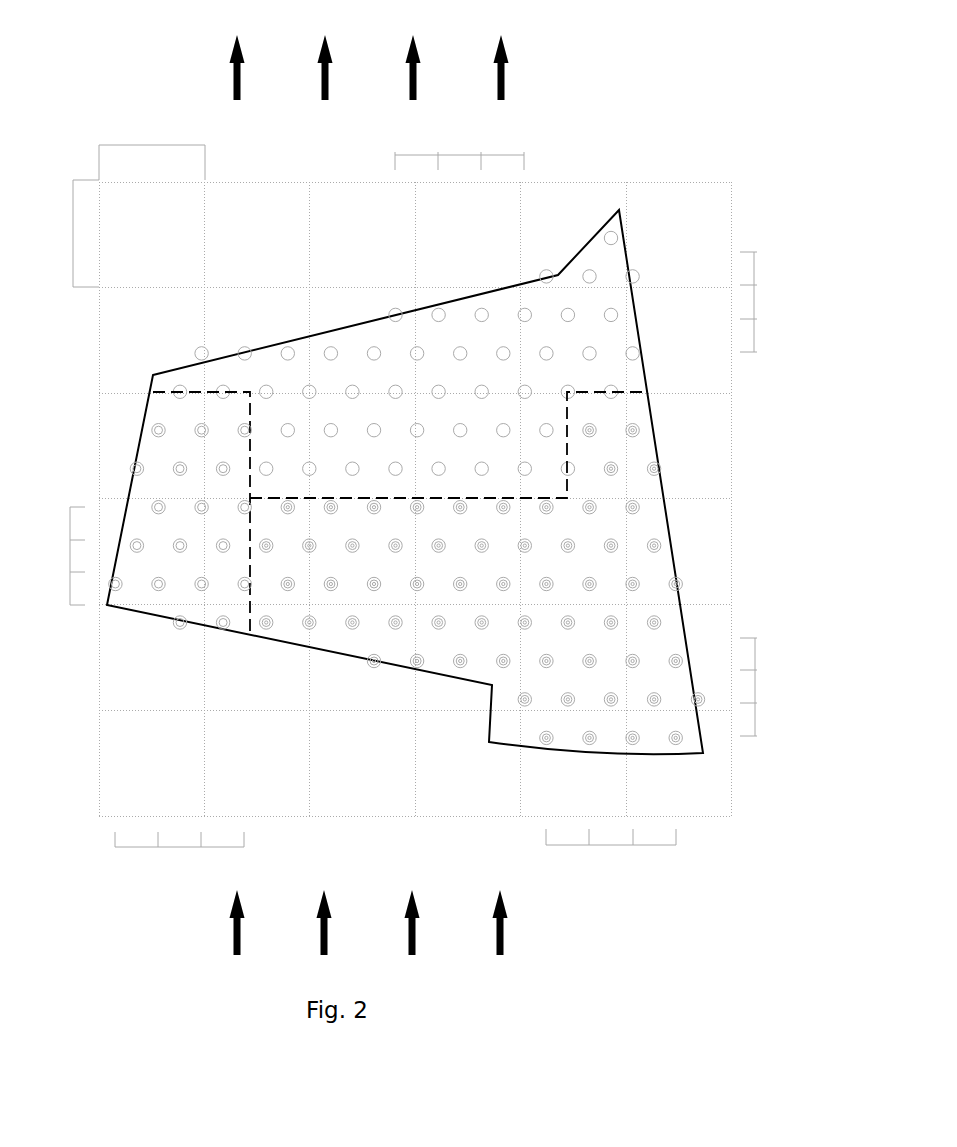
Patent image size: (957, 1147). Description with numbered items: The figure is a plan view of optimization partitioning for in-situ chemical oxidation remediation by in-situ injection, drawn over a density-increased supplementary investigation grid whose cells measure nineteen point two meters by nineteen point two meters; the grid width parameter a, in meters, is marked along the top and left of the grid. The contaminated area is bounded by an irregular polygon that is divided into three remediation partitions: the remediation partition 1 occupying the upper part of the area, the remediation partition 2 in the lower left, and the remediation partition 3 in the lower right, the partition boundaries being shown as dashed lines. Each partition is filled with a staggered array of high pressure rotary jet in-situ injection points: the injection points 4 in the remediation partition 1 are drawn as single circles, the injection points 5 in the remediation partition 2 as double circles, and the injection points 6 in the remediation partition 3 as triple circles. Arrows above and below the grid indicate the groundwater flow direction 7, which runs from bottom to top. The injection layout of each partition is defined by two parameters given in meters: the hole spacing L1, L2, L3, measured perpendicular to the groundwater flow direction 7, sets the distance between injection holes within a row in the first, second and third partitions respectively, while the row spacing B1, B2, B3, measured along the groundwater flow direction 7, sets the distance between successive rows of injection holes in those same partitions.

The remediation partition 1 is at (310, 350).
The remediation partition 2 is at (163, 482).
The remediation partition 3 is at (640, 528).
The high pressure rotary jet in-situ injection points in remediation partition 4 is at (373, 346).
The high pressure rotary jet in-situ injection points in remediation partition 5 is at (152, 432).
The high pressure rotary jet in-situ injection points in remediation partition 6 is at (635, 432).
The groundwater flow direction 7 is at (503, 82).
The density-increased supplementary investigation grid width parameter a is at (108, 180).
The in-situ injection hole spacing parameter L1 is at (459, 143).
The in-situ injection hole spacing parameter L2 is at (179, 857).
The in-situ injection hole spacing parameter L3 is at (611, 856).
The in-situ injection row spacing parameter B1 is at (765, 302).
The in-situ injection row spacing parameter B2 is at (57, 556).
The in-situ injection row spacing parameter B3 is at (765, 687).